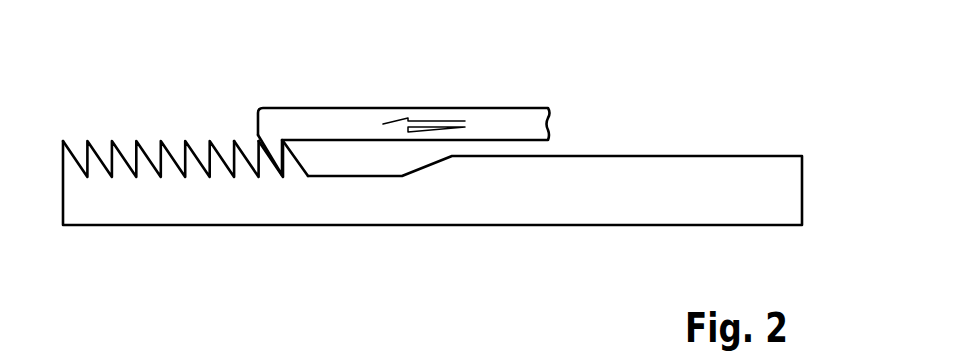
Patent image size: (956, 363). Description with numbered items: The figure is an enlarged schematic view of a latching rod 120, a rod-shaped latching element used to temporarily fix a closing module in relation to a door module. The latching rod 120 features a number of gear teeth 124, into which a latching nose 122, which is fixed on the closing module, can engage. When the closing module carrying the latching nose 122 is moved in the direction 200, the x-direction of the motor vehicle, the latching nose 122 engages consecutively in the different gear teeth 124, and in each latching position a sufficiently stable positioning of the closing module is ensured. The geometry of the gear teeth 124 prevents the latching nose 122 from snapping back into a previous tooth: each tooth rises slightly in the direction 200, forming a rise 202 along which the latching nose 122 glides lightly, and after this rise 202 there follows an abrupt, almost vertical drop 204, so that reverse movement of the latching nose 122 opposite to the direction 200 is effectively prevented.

The latching rod 120 is at (438, 174).
The latching nose 122 is at (273, 118).
The gear teeth 124 is at (290, 163).
The direction 200 is at (407, 105).
The rise 202 is at (244, 166).
The drop 204 is at (173, 174).